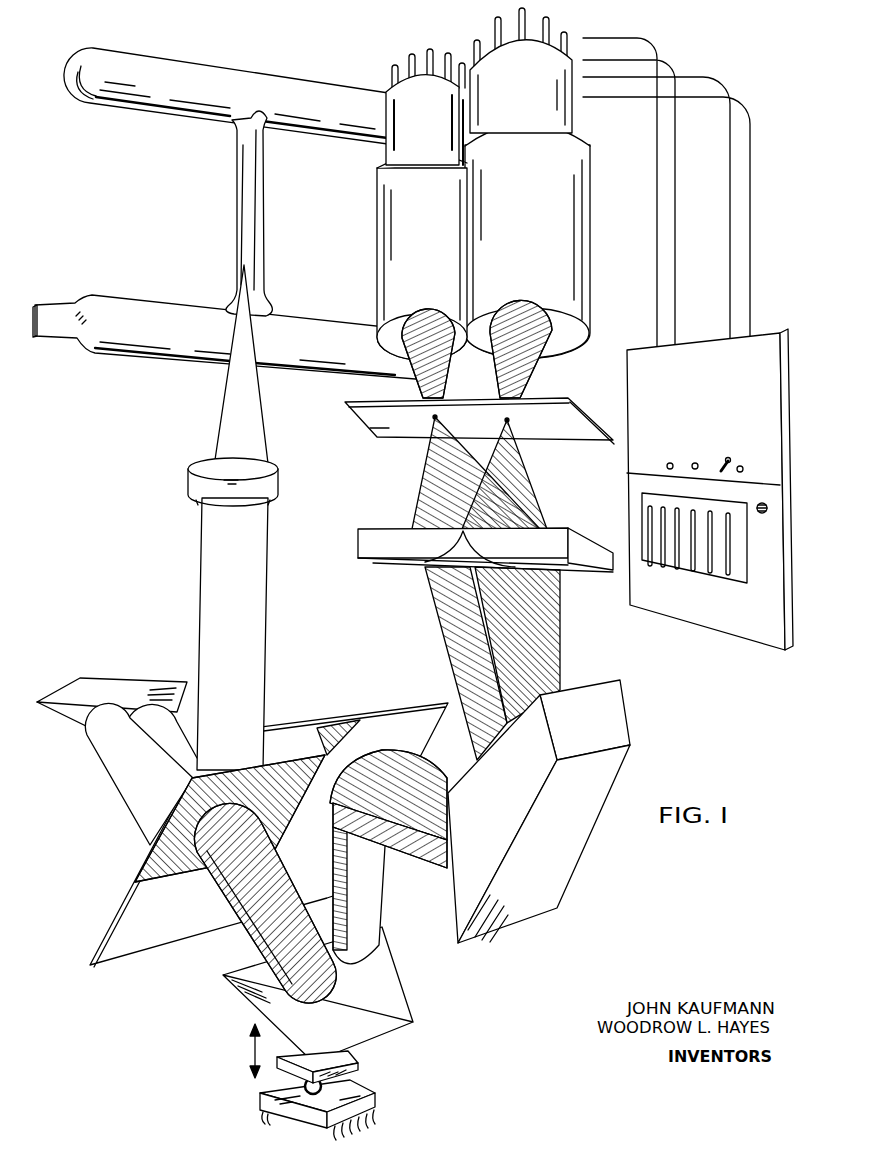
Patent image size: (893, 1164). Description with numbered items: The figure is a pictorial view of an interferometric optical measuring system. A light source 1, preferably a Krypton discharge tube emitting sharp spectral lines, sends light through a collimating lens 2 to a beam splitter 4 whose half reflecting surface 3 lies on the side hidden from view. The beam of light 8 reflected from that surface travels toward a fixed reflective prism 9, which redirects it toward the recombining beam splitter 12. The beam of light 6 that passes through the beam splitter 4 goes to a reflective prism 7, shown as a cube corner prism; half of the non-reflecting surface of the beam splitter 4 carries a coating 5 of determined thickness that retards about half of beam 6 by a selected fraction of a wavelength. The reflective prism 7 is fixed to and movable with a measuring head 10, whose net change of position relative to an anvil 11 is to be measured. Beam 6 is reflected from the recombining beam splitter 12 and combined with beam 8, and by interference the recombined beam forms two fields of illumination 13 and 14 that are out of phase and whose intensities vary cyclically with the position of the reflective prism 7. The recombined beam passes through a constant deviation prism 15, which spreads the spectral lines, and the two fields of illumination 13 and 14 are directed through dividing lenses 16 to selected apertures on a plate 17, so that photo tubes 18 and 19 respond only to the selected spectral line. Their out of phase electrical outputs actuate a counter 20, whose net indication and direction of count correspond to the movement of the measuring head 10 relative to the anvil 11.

The light source 1 is at (237, 216).
The collimating lens 2 is at (278, 482).
The half reflecting surface 3 is at (258, 680).
The beam splitter 4 is at (120, 968).
The coating 5 is at (160, 850).
The beam of light 6 is at (240, 936).
The reflective prism 7 is at (413, 1024).
The beam of light 8 is at (286, 727).
The reflective prism 9 is at (110, 690).
The measuring head 10 is at (350, 1052).
The anvil 11 is at (376, 1097).
The recombining beam splitter 12 is at (383, 710).
The field of illumination 13 is at (438, 780).
The field of illumination 14 is at (398, 848).
The constant deviation prism 15 is at (585, 866).
The dividing lenses 16 is at (541, 524).
The plate 17 is at (586, 441).
The photo tube 18 is at (580, 214).
The photo tube 19 is at (378, 215).
The counter 20 is at (677, 622).